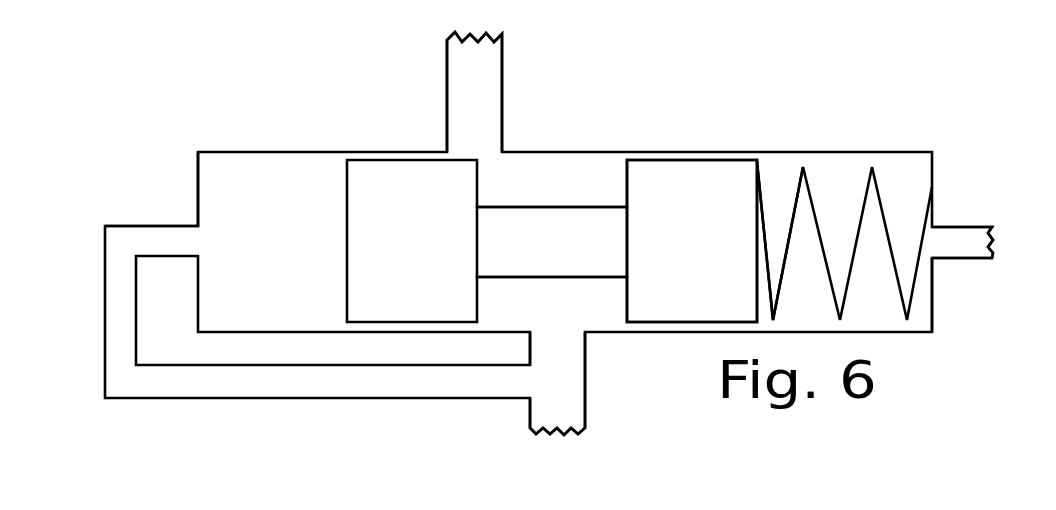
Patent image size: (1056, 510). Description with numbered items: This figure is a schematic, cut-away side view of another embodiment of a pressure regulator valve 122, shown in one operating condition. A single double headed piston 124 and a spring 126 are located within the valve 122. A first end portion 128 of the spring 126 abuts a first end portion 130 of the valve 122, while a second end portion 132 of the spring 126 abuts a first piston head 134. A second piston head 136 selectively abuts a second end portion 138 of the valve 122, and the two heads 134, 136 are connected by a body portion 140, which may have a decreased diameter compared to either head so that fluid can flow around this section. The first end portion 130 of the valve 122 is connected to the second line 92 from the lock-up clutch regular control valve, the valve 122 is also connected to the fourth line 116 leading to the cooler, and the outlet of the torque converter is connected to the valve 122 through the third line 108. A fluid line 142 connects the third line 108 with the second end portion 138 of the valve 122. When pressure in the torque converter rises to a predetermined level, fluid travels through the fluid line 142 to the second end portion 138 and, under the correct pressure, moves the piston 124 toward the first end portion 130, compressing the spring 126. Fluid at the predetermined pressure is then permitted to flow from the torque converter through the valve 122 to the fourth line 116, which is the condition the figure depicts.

The second line 92 is at (967, 232).
The third line 108 is at (554, 404).
The fourth line 116 is at (453, 70).
The pressure regulator valve 122 is at (706, 77).
The double headed piston 124 is at (718, 198).
The spring 126 is at (894, 198).
The first end portion of the spring 128 is at (938, 283).
The first end portion of the valve 130 is at (938, 323).
The second end portion of the spring 132 is at (769, 196).
The first piston head 134 is at (663, 195).
The second piston head 136 is at (386, 190).
The second end portion of the valve 138 is at (188, 180).
The body portion 140 is at (570, 253).
The fluid line 142 is at (186, 382).